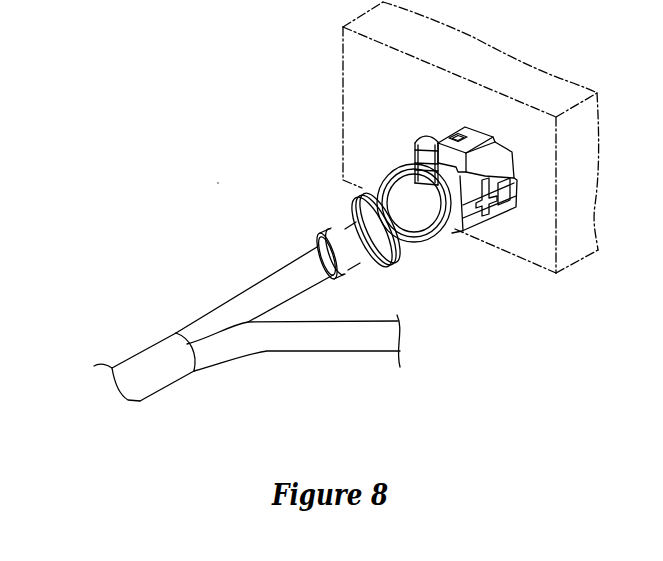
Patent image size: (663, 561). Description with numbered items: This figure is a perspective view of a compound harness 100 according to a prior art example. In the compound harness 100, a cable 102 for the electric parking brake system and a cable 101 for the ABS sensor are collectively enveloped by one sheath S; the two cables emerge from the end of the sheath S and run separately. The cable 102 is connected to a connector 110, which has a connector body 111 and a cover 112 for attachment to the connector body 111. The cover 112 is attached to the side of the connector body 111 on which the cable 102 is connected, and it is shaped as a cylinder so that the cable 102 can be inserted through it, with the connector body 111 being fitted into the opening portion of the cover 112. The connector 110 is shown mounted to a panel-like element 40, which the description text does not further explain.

The compound harness 100 is at (218, 183).
The panel wall 40 is at (343, 46).
The sheath S is at (151, 353).
The cable 101 is at (344, 346).
The cable 102 is at (289, 275).
The connector 110 is at (439, 238).
The connector body 111 is at (448, 135).
The cover 112 is at (346, 231).